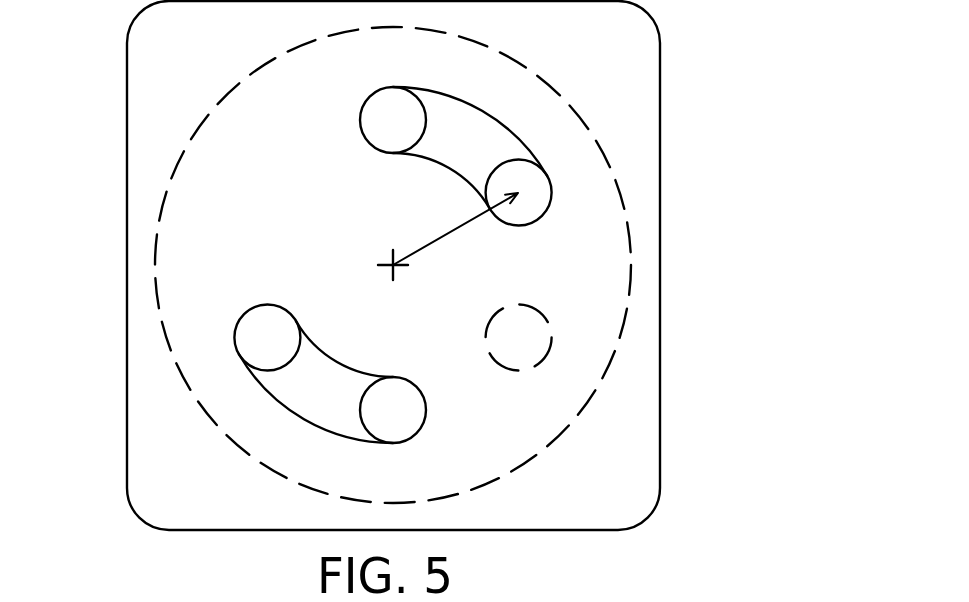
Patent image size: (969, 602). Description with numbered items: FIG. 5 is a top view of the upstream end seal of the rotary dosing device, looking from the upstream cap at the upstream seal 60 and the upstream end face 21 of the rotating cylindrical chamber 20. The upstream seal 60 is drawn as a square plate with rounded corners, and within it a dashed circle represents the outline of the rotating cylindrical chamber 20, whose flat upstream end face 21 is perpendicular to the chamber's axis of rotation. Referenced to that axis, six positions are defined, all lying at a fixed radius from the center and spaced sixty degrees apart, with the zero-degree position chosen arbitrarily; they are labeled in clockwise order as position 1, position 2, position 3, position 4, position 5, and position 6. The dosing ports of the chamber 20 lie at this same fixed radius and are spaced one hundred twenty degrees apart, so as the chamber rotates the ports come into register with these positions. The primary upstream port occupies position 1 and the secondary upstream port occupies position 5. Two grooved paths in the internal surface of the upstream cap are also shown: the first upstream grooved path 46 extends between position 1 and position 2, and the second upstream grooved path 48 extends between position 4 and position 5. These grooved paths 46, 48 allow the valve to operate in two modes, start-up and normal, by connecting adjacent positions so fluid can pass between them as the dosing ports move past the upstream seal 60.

The position 1 is at (393, 97).
The position 2 is at (538, 190).
The position 3 is at (535, 341).
The position 4 is at (393, 433).
The position 5 is at (256, 349).
The position 6 is at (214, 165).
The rotating cylindrical chamber 20 is at (218, 105).
The upstream end face 21 is at (195, 233).
The first upstream grooved path 46 is at (472, 137).
The second upstream grooved path 48 is at (305, 382).
The upstream seal 60 is at (615, 72).